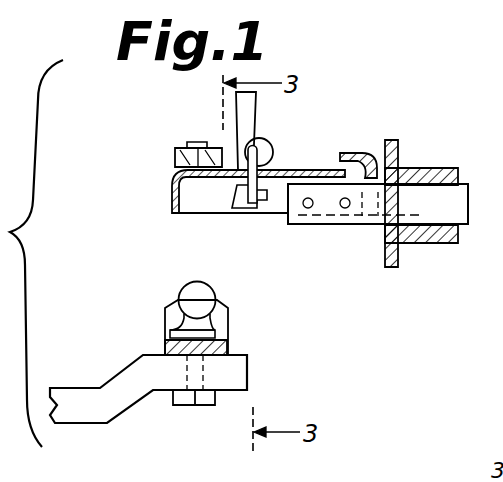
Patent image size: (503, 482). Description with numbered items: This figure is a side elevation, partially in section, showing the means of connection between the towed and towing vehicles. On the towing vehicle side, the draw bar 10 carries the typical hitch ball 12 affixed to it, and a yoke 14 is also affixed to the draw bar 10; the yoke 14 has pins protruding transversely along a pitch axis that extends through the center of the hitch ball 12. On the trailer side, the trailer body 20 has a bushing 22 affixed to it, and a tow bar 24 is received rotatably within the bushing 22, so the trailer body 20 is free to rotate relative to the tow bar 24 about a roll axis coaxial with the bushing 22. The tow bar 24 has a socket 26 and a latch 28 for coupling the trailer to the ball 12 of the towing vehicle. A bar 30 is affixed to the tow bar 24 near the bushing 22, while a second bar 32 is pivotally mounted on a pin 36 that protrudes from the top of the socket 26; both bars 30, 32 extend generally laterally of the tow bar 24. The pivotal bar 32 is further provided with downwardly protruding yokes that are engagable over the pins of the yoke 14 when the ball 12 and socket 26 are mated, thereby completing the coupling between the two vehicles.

The draw bar 10 is at (102, 350).
The hitch ball 12 is at (187, 292).
The yoke 14 is at (165, 348).
The body 20 is at (398, 255).
The bushing 22 is at (473, 132).
The tow bar 24 is at (308, 224).
The socket 26 is at (172, 186).
The latch 28 is at (315, 118).
The bar 30 is at (383, 118).
The bar 32 is at (175, 155).
The pin 36 is at (195, 148).